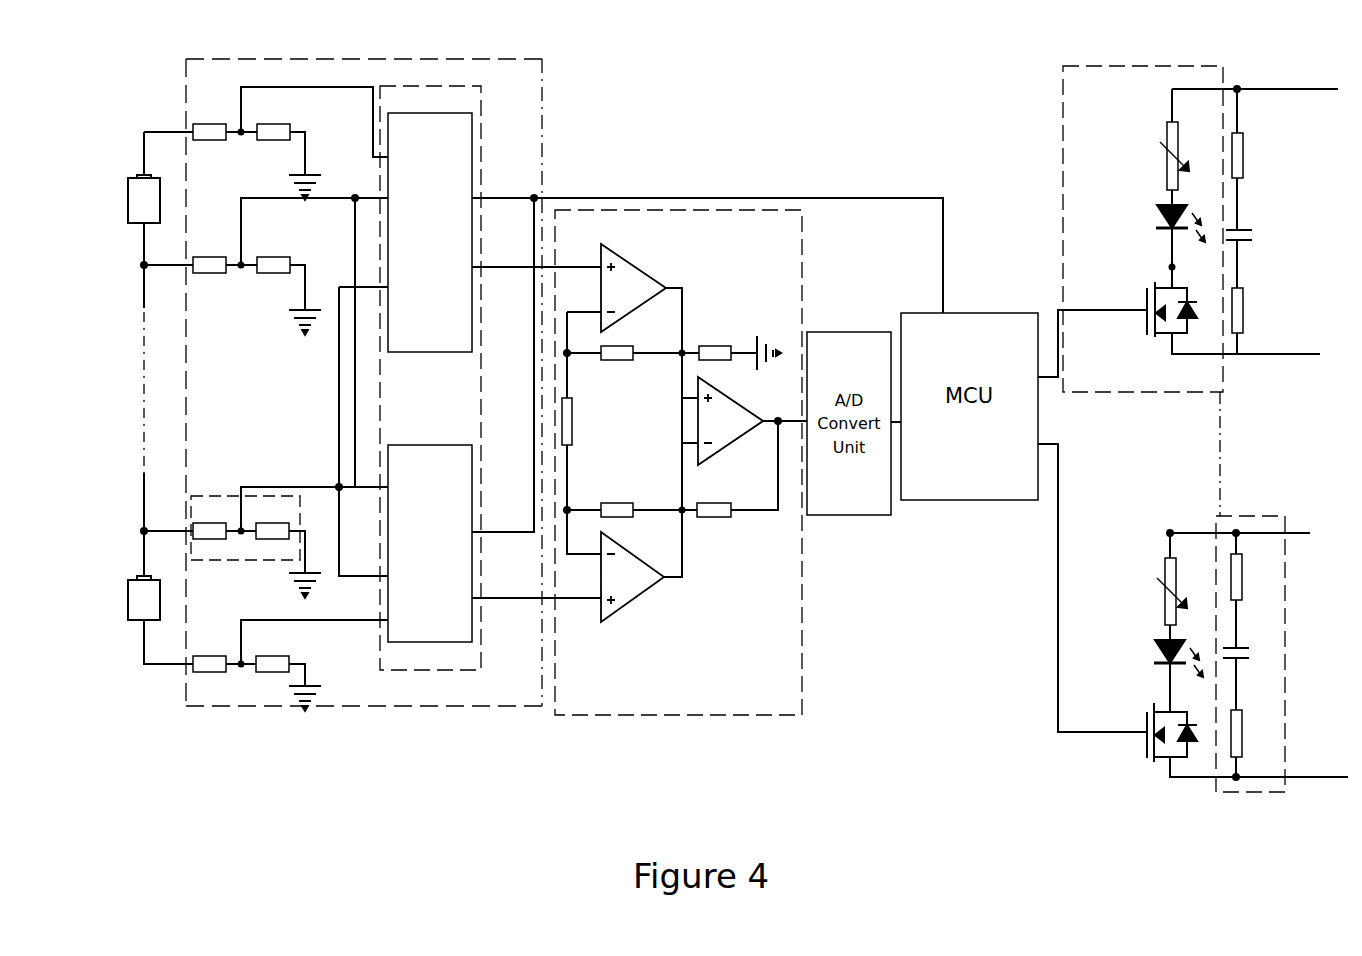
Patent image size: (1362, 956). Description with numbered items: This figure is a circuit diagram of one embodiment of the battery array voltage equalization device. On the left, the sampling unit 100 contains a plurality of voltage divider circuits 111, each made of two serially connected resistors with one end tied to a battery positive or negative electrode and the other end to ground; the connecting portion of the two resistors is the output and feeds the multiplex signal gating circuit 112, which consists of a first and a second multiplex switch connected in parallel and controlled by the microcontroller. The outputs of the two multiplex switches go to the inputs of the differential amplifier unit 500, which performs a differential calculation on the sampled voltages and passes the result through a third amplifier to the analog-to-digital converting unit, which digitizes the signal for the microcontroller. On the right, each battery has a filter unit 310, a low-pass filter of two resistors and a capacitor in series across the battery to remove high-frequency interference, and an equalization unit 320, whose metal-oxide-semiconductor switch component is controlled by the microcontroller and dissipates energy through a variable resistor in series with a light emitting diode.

The sampling unit 100 is at (378, 706).
The voltage divider circuit 111 is at (199, 496).
The multiplex signal gating circuit 112 is at (481, 112).
The differential amplifier unit 500 is at (670, 208).
The equalization unit 320 is at (1062, 113).
The filter unit 310 is at (1248, 515).